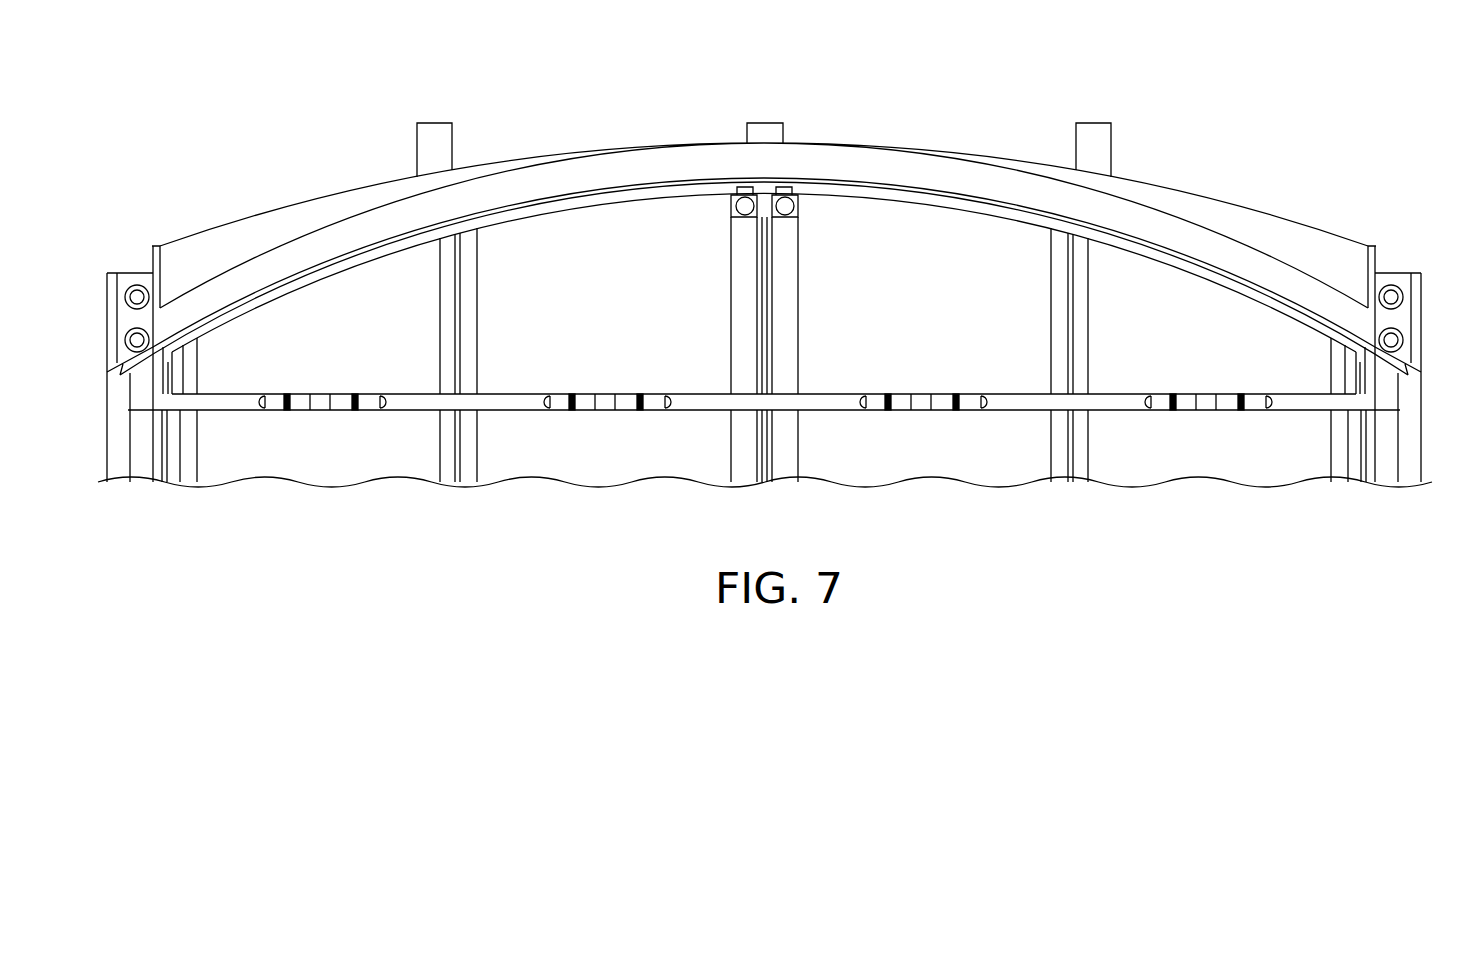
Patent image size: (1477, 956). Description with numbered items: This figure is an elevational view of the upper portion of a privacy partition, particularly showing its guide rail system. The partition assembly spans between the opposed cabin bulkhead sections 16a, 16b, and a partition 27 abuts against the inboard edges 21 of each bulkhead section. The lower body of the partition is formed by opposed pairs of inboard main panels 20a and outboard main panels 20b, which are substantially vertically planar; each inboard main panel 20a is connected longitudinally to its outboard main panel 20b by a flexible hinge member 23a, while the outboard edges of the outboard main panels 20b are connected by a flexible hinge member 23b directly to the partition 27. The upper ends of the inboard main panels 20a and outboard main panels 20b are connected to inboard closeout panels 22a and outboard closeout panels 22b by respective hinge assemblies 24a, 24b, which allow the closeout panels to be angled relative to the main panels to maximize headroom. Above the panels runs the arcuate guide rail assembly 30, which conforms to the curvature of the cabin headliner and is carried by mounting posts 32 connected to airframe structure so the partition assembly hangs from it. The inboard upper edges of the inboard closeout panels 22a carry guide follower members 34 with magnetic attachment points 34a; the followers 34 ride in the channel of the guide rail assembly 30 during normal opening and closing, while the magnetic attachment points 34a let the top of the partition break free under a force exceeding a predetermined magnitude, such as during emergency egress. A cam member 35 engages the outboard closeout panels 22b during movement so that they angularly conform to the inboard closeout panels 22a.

The cabin bulkhead section 16a is at (117, 455).
The cabin bulkhead section 16b is at (1413, 404).
The inboard main panel 20a is at (610, 467).
The outboard main panel 20b is at (322, 459).
The inboard edge 21 is at (140, 465).
The inboard closeout panel 22a is at (630, 294).
The outboard closeout panel 22b is at (392, 324).
The flexible hinge member 23a is at (464, 460).
The flexible hinge member 23b is at (190, 452).
The hinge assembly 24a is at (607, 394).
The hinge assembly 24b is at (322, 394).
The partition 27 is at (160, 455).
The arcuate guide rail assembly 30 is at (1243, 237).
The mounting post 32 is at (437, 127).
The guide follower member 34 is at (743, 187).
The magnetic attachment point 34a is at (742, 205).
The cam member 35 is at (170, 373).